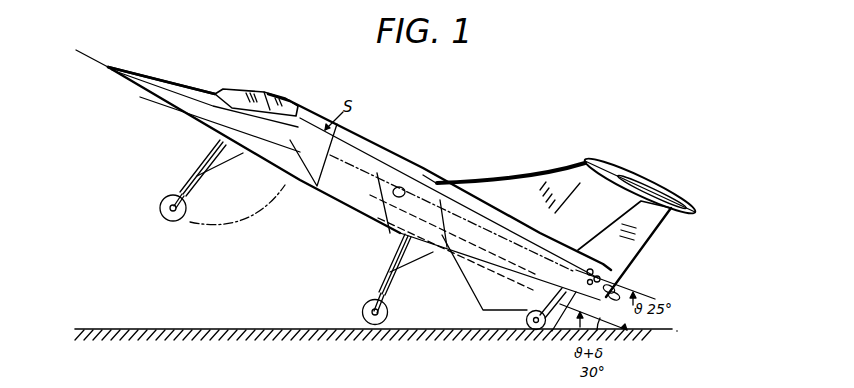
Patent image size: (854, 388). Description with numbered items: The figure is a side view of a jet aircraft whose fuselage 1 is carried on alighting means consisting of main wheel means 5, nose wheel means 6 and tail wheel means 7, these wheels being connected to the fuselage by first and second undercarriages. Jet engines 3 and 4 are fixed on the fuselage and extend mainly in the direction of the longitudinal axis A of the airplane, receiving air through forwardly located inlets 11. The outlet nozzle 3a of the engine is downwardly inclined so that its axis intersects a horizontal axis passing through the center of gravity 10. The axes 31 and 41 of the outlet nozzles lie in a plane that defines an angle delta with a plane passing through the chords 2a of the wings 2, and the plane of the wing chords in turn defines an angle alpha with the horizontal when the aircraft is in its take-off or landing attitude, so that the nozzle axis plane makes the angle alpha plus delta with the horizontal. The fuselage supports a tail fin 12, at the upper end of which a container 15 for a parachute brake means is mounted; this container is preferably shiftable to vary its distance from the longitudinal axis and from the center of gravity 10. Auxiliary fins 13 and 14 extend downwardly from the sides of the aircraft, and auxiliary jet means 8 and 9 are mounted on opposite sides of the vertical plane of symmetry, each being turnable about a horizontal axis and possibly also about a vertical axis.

The fuselage 1 is at (163, 84).
The longitudinal axis A is at (147, 106).
The wings 2 is at (443, 180).
The chords 2a is at (423, 175).
The jet engine 3 is at (453, 202).
The jet engine 4 is at (392, 172).
The outlet nozzle 3a is at (550, 327).
The main wheel means 5 is at (362, 311).
The nose wheel means 6 is at (170, 221).
The tail wheel means 7 is at (526, 320).
The auxiliary jet means 8 is at (621, 284).
The auxiliary jet means 9 is at (618, 282).
The center of gravity 10 is at (404, 192).
The inlets 11 is at (299, 196).
The tail fin 12 is at (530, 187).
The auxiliary fin 13 is at (483, 276).
The auxiliary fin 14 is at (473, 273).
The container 15 is at (617, 167).
The axis 31 is at (376, 340).
The axis 41 is at (620, 343).